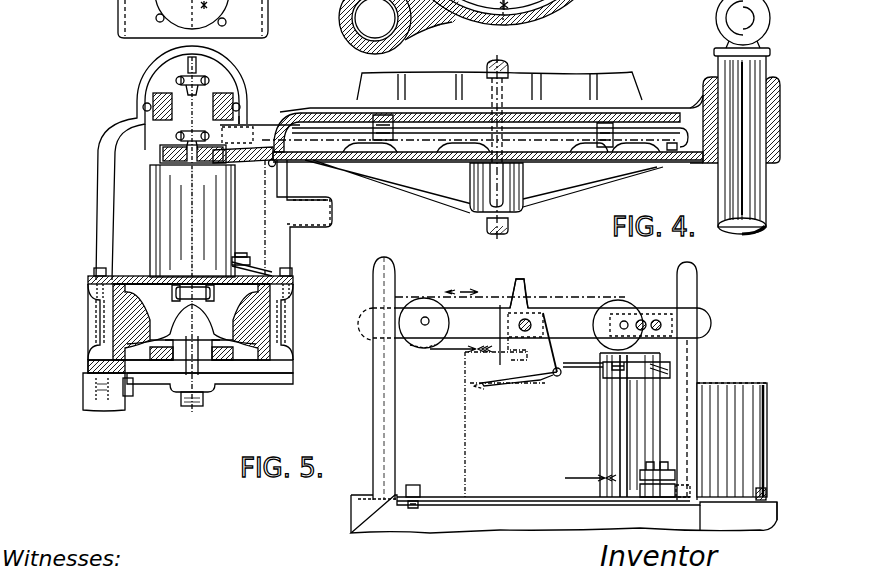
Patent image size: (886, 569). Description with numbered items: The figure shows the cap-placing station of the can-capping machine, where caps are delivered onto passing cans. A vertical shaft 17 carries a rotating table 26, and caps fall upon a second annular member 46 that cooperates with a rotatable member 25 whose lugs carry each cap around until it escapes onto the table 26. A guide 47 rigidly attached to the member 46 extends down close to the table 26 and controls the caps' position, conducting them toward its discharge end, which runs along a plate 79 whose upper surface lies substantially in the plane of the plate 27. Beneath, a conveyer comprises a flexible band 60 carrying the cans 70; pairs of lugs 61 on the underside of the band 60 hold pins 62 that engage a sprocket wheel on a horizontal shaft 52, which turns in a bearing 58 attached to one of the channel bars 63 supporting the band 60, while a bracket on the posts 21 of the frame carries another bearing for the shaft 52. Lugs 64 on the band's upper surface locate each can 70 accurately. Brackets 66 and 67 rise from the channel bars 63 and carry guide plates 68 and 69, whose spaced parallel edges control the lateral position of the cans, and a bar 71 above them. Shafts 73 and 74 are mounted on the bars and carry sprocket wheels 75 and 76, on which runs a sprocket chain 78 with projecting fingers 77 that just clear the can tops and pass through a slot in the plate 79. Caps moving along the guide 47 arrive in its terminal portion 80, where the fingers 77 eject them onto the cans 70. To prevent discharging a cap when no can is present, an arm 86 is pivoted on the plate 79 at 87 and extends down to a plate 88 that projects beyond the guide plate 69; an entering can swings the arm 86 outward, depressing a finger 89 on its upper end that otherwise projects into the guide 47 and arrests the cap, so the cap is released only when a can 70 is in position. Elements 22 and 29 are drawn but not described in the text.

In FIG. 4, the vertical shaft 17 is at (512, 228).
In FIG. 4, the posts 21 is at (395, 30).
In FIG. 4, the clamp block 22 is at (720, 183).
In FIG. 4, the rotatable member 25 is at (633, 80).
In FIG. 4, the table 26 is at (520, 186).
In FIG. 4, the plate 27 is at (652, 167).
In FIG. 4, the handle post 29 is at (332, 24).
In FIG. 4, the second annular member 46 is at (313, 161).
In FIG. 4, the guide 47 is at (670, 150).
In FIG. 4, the horizontal shaft 52 is at (131, 397).
In FIG. 4, the bearing 58 is at (105, 405).
In FIG. 4, the band 60 is at (103, 288).
In FIG. 5, the band 60 is at (366, 498).
In FIG. 4, the lugs 61 is at (172, 294).
In FIG. 4, the pin 62 is at (200, 303).
In FIG. 4, the channel bars 63 is at (118, 330).
In FIG. 5, the channel bars 63 is at (500, 517).
In FIG. 4, the lugs 64 is at (222, 280).
In FIG. 5, the lugs 64 is at (770, 486).
In FIG. 5, the bracket 66 is at (385, 387).
In FIG. 4, the bracket 67 is at (112, 138).
In FIG. 5, the bracket 67 is at (698, 270).
In FIG. 4, the guide plate 68 is at (96, 274).
In FIG. 5, the guide plate 68 is at (458, 495).
In FIG. 4, the guide plate 69 is at (226, 284).
In FIG. 5, the cans 70 is at (705, 420).
In FIG. 5, the bar 71 is at (580, 322).
In FIG. 5, the shaft 73 is at (426, 316).
In FIG. 5, the shaft 74 is at (626, 321).
In FIG. 5, the sprocket wheel 75 is at (410, 298).
In FIG. 4, the sprocket wheel 76 is at (118, 3).
In FIG. 5, the sprocket wheel 76 is at (617, 300).
In FIG. 4, the fingers 77 is at (185, 68).
In FIG. 5, the fingers 77 is at (512, 282).
In FIG. 4, the sprocket chain 78 is at (178, 84).
In FIG. 5, the sprocket chain 78 is at (456, 352).
In FIG. 4, the plate 79 is at (168, 155).
In FIG. 5, the portion 80 is at (557, 366).
In FIG. 4, the arm 86 is at (279, 212).
In FIG. 5, the arm 86 is at (663, 397).
In FIG. 4, the pivot 87 is at (276, 166).
In FIG. 5, the pivot 87 is at (673, 372).
In FIG. 4, the plate 88 is at (250, 264).
In FIG. 5, the plate 88 is at (610, 505).
In FIG. 4, the finger 89 is at (258, 165).